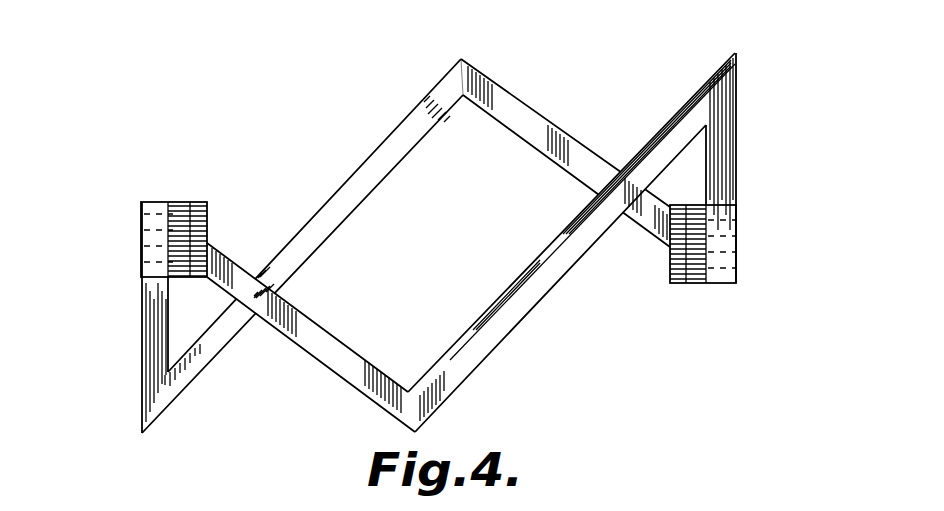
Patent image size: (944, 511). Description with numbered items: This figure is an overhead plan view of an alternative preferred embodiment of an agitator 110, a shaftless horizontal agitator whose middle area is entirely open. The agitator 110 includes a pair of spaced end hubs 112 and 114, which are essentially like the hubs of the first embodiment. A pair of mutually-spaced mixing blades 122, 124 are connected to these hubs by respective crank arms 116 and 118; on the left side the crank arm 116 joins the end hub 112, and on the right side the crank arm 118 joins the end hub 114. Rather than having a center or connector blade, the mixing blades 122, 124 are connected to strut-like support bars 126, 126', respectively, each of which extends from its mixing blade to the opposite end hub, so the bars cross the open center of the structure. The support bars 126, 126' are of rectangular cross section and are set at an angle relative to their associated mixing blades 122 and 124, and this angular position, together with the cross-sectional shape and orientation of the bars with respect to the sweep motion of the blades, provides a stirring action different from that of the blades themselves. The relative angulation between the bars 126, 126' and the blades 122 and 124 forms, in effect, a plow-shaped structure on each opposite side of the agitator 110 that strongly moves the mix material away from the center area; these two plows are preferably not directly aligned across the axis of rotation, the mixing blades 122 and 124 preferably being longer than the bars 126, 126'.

The agitator 110 is at (342, 108).
The end hub 112 is at (143, 241).
The end hub 114 is at (732, 207).
The crank arm 116 is at (152, 350).
The crank arm 118 is at (725, 125).
The mixing blade 122 is at (542, 277).
The mixing blade 124 is at (325, 208).
The support bar 126 is at (311, 337).
The support bar 126' is at (565, 137).